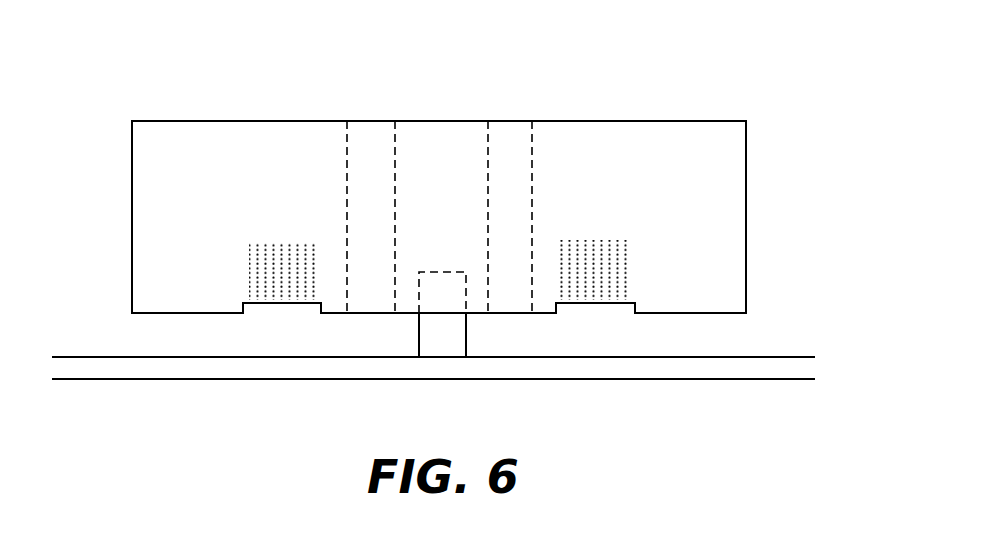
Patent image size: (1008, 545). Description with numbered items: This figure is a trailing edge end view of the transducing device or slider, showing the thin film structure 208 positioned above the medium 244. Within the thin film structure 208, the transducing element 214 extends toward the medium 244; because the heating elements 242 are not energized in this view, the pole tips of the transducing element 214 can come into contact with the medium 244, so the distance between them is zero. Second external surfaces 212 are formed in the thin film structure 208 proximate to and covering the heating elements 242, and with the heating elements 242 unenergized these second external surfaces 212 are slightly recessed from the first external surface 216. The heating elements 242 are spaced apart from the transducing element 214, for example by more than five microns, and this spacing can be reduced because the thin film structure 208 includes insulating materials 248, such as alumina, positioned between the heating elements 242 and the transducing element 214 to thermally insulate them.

The thin film structure 208 is at (794, 123).
The second external surfaces 212 is at (285, 304).
The transducing element 214 is at (408, 329).
The first external surface 216 is at (227, 316).
The heating elements 242 is at (248, 253).
The medium 244 is at (732, 368).
The insulating materials 248 is at (375, 142).